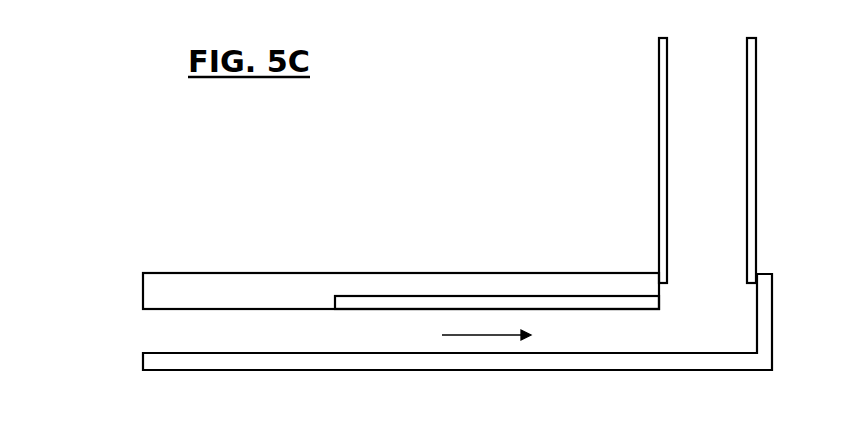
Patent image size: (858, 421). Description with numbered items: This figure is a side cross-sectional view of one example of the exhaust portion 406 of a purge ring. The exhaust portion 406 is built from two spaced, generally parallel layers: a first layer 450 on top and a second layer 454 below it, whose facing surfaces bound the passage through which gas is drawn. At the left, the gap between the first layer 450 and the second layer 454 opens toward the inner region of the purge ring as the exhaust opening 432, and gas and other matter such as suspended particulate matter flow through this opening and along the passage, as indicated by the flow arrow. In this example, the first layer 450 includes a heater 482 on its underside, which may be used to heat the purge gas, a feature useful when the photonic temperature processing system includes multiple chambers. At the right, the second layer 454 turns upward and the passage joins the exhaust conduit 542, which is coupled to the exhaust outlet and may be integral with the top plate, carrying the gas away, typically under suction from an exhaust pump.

The exhaust portion 406 is at (360, 214).
The exhaust opening 432 is at (122, 327).
The first layer 450 is at (293, 273).
The second layer 454 is at (385, 353).
The heater 482 is at (553, 296).
The exhaust conduit 542 is at (757, 99).